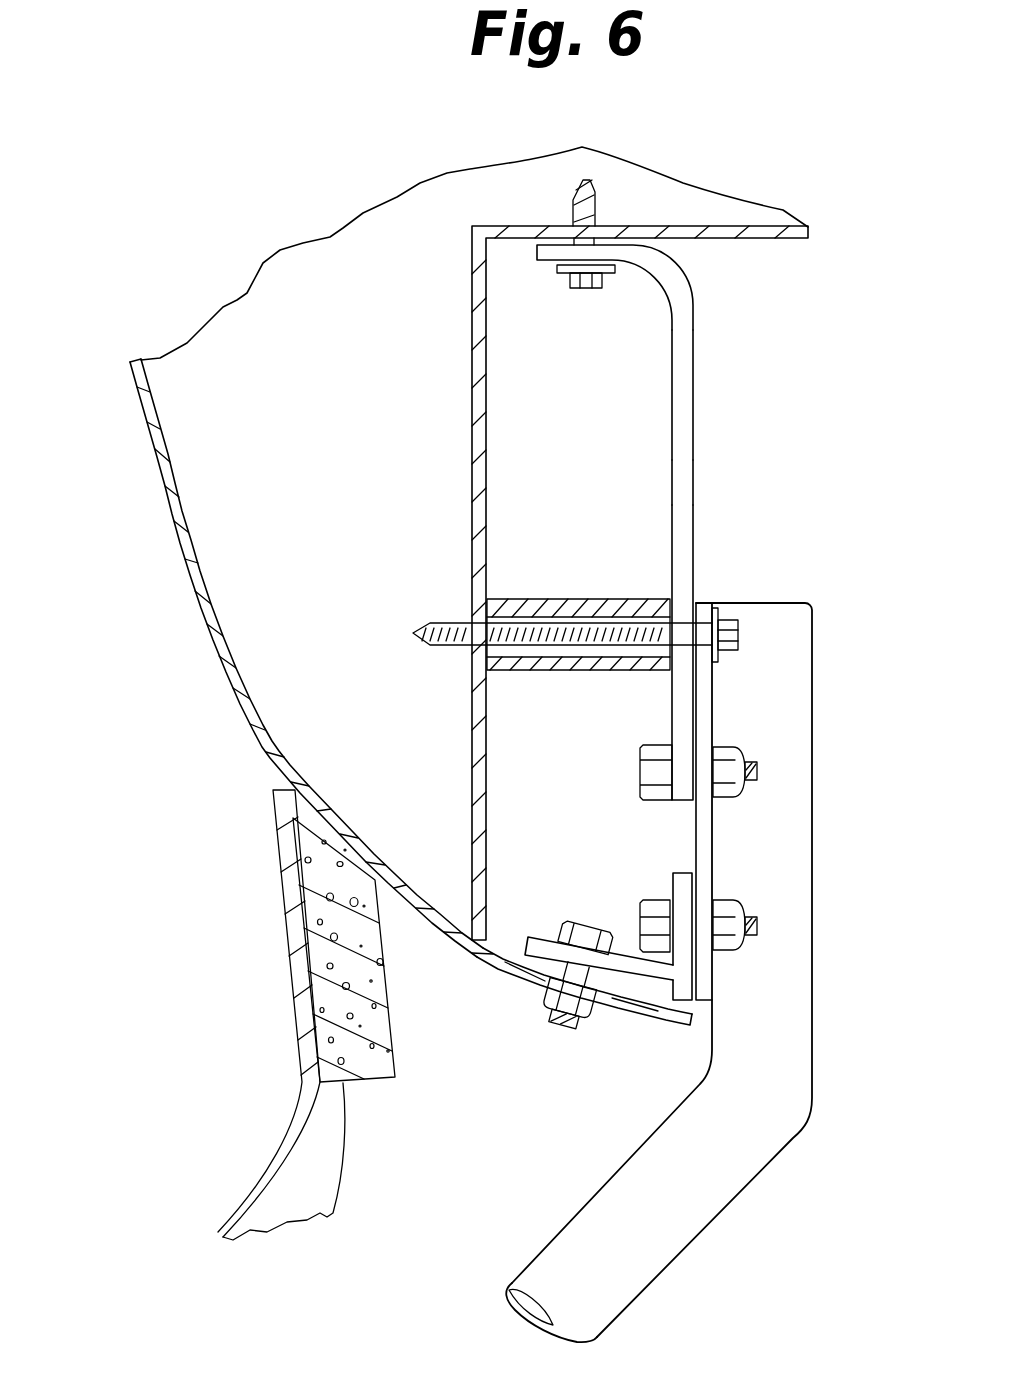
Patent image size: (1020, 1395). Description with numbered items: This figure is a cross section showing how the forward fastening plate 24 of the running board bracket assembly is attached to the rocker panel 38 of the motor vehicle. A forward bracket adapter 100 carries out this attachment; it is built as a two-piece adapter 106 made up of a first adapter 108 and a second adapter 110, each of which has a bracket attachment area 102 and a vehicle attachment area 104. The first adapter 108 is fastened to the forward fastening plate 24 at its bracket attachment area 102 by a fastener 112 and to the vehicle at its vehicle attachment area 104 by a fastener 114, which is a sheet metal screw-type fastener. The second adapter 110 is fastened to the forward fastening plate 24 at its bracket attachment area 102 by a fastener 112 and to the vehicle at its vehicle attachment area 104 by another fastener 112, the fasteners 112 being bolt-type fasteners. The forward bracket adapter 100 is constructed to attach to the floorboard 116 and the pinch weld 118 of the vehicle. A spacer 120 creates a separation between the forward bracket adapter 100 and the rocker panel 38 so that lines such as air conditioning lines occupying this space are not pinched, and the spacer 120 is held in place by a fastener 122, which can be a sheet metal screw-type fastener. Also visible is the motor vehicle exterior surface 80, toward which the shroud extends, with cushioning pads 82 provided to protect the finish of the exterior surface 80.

The forward fastening plate 24 is at (717, 705).
The rocker panel 38 is at (473, 540).
The motor vehicle exterior surface 80 is at (190, 590).
The cushioning pads 82 is at (384, 1016).
The forward bracket adapter 100 is at (689, 622).
The bracket attachment area 102 is at (648, 695).
The vehicle attachment area 104 is at (627, 365).
The two-piece adapter 106 is at (627, 790).
The first adapter 108 is at (652, 483).
The second adapter 110 is at (572, 905).
The fastener 112 is at (722, 893).
The fastener 114 is at (600, 288).
The floorboard 116 is at (702, 230).
The pinch weld 118 is at (500, 963).
The spacer 120 is at (567, 600).
The fastener 122 is at (730, 633).